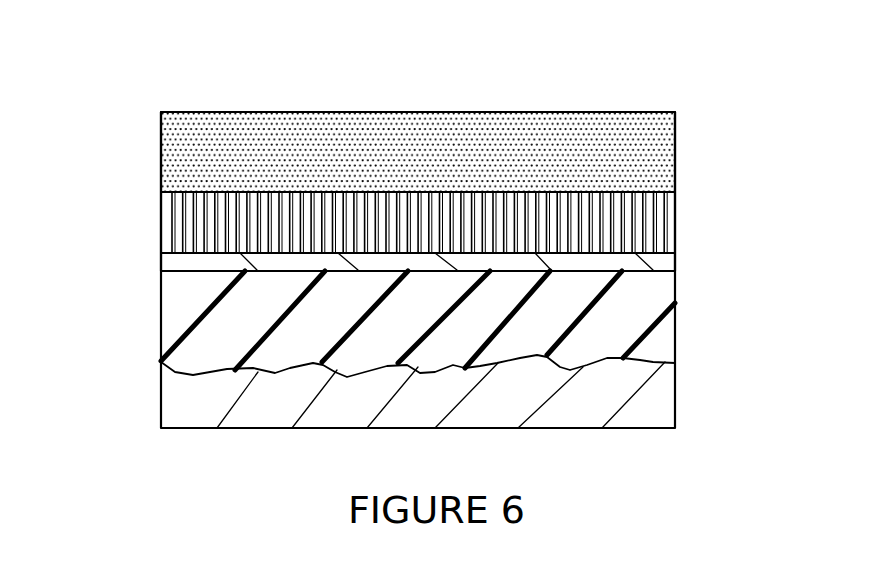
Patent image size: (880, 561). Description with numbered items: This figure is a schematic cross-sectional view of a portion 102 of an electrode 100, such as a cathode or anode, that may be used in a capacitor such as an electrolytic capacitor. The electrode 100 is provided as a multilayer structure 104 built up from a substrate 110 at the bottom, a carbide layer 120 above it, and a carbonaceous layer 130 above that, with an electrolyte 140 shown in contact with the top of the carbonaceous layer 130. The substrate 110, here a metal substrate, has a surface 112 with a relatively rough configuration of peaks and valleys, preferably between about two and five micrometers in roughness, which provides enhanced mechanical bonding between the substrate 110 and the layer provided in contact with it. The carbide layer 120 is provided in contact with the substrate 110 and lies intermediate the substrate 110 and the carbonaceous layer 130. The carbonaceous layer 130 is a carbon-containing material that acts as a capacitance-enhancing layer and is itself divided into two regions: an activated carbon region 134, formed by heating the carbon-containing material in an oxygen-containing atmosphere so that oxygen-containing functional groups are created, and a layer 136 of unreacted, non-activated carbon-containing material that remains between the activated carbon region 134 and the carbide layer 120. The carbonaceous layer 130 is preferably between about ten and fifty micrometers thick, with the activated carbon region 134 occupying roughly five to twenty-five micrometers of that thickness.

The electrode 100 is at (662, 84).
The portion of electrode 102 is at (700, 295).
The multilayer structure 104 is at (145, 192).
The substrate 110 is at (675, 399).
The surface of substrate 112 is at (275, 374).
The carbide layer 120 is at (675, 327).
The carbonaceous layer 130 is at (685, 189).
The activated carbon region 134 is at (663, 206).
The layer of unreacted carbon-containing material 136 is at (675, 267).
The electrolyte 140 is at (228, 122).